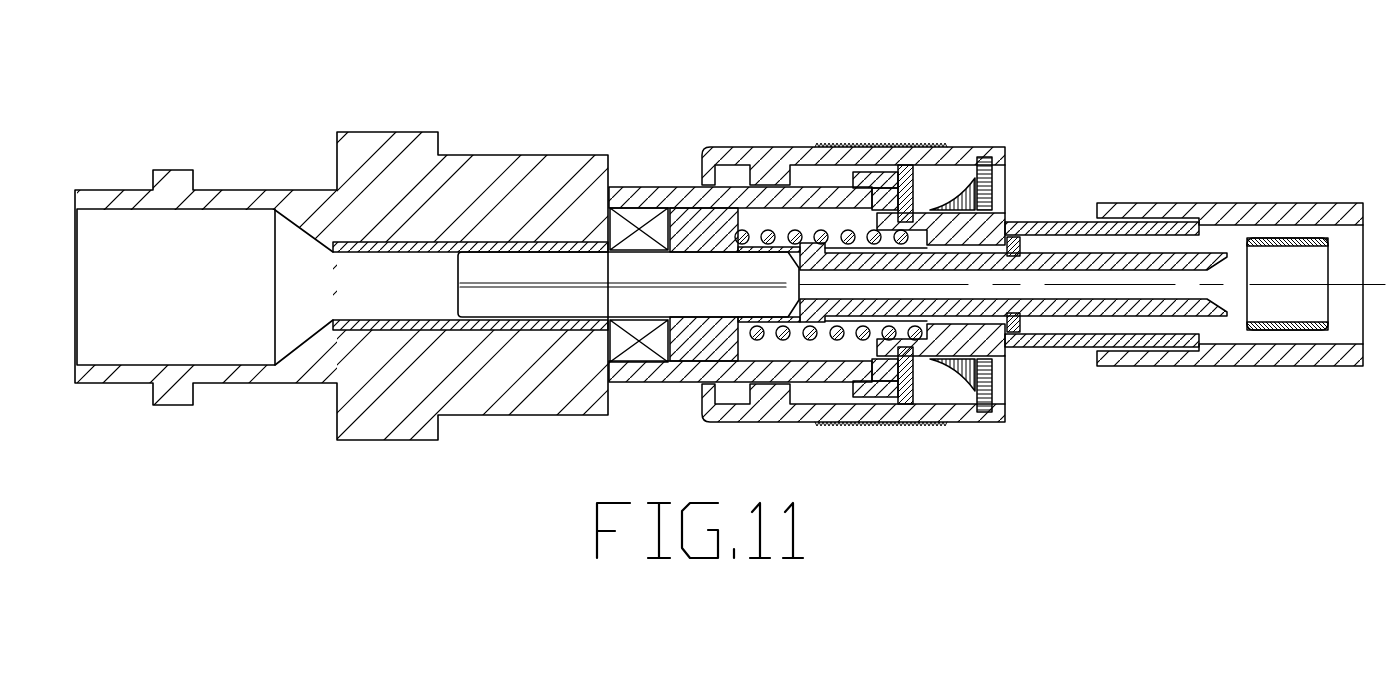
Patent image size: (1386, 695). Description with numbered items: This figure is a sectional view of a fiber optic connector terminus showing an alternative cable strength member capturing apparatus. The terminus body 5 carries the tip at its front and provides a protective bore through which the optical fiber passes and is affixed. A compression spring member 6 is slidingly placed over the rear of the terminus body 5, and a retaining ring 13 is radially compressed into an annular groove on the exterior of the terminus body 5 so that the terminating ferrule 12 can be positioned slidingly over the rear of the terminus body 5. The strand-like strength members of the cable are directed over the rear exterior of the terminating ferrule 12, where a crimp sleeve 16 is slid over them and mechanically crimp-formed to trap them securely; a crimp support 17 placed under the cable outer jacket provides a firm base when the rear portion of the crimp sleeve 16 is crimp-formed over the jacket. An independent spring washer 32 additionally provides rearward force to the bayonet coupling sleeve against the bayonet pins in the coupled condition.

The terminus body 5 is at (687, 220).
The compression spring member 6 is at (765, 232).
The independent spring washer 32 is at (960, 182).
The terminating ferrule 12 is at (1002, 208).
The retaining ring 13 is at (1016, 232).
The crimp sleeve 16 is at (1222, 207).
The crimp support 17 is at (1295, 240).